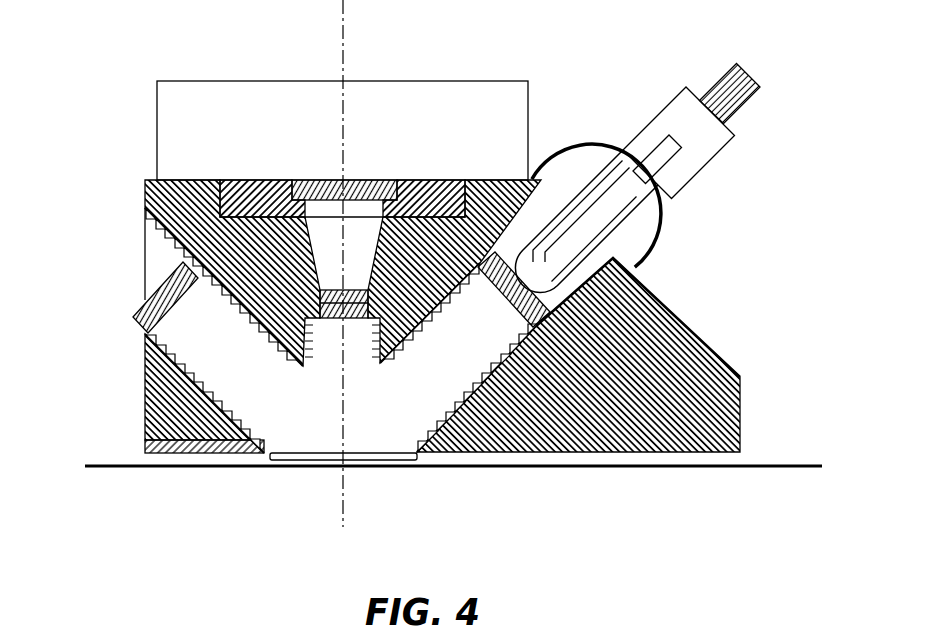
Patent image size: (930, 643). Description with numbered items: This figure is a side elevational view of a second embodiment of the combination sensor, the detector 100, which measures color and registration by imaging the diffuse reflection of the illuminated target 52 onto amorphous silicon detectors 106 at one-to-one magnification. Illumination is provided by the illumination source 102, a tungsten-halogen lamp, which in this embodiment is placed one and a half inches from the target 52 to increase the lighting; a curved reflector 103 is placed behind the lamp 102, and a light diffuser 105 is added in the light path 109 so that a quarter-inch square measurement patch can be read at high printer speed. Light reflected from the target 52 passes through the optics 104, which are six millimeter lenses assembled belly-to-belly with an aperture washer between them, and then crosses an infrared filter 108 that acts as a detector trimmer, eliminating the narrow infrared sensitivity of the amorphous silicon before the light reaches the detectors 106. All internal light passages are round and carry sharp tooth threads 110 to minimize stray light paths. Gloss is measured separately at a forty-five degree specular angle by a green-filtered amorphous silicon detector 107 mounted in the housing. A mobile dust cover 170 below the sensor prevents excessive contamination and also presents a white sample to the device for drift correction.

The detector 100 is at (110, 115).
The illumination source 102 is at (637, 217).
The curved reflector 103 is at (578, 145).
The optics 104 is at (352, 318).
The light diffuser 105 is at (543, 330).
The detectors 106 is at (505, 93).
The green-filtered amorphous silicon detector 107 is at (145, 288).
The infrared filter 108 is at (303, 180).
The light path 109 is at (245, 397).
The sharp tooth threads 110 is at (483, 383).
The mobile dust cover 170 is at (308, 461).
The target 52 is at (711, 469).